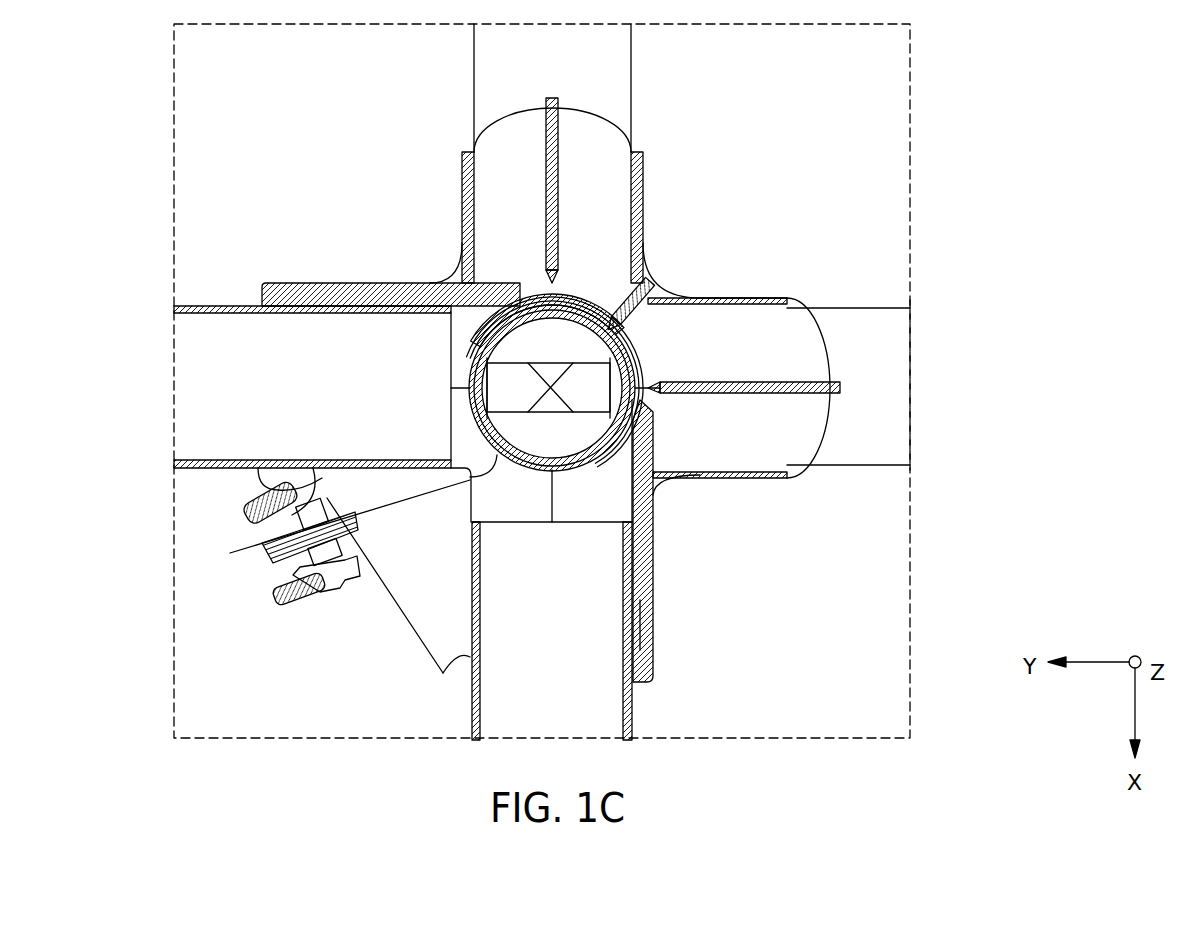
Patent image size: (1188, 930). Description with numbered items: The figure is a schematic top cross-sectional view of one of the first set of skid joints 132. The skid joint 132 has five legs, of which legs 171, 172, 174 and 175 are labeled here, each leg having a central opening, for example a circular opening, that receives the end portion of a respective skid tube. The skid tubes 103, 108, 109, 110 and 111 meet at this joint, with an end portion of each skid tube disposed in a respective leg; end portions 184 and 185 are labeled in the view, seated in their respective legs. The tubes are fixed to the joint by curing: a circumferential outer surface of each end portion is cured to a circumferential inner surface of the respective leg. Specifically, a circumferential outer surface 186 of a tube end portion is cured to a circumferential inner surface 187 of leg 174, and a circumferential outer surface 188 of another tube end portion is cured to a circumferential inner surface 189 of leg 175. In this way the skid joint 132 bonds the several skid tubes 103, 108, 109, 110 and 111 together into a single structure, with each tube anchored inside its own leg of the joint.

The skid tube 108 is at (580, 66).
The leg 172 is at (505, 197).
The end portion 185 is at (322, 303).
The leg 175 is at (380, 280).
The skid tube 111 is at (211, 300).
The circumferential inner surface 189 is at (410, 470).
The skid tube 109 is at (640, 332).
The leg 171 is at (770, 345).
The skid tube 103 is at (873, 418).
The leg 174 is at (660, 590).
The skid joint 132 is at (660, 512).
The end portion 184 is at (632, 628).
The skid tube 110 is at (650, 707).
The circumferential outer surface 188 is at (270, 547).
The circumferential inner surface 187 is at (470, 583).
The circumferential outer surface 186 is at (470, 657).